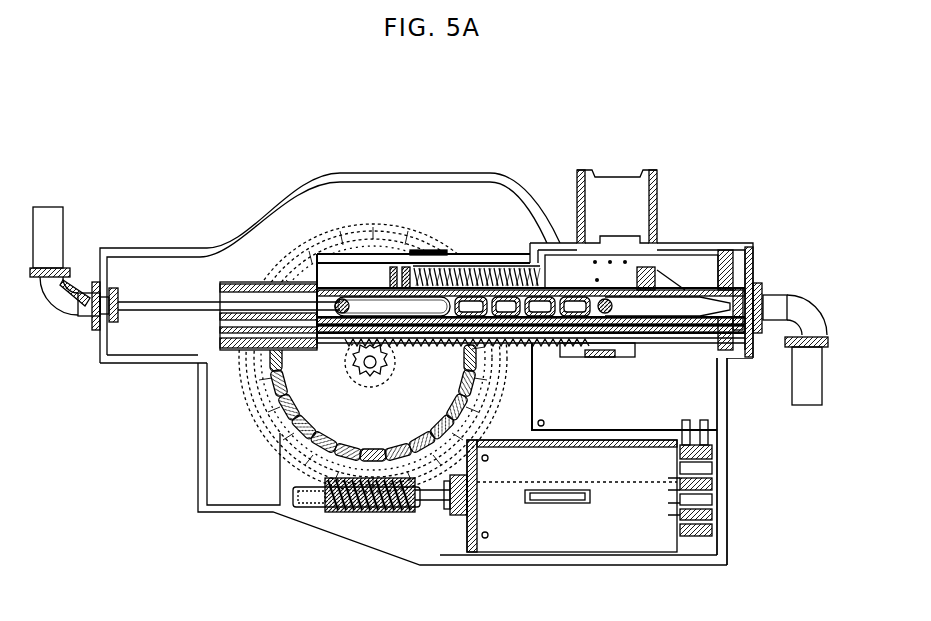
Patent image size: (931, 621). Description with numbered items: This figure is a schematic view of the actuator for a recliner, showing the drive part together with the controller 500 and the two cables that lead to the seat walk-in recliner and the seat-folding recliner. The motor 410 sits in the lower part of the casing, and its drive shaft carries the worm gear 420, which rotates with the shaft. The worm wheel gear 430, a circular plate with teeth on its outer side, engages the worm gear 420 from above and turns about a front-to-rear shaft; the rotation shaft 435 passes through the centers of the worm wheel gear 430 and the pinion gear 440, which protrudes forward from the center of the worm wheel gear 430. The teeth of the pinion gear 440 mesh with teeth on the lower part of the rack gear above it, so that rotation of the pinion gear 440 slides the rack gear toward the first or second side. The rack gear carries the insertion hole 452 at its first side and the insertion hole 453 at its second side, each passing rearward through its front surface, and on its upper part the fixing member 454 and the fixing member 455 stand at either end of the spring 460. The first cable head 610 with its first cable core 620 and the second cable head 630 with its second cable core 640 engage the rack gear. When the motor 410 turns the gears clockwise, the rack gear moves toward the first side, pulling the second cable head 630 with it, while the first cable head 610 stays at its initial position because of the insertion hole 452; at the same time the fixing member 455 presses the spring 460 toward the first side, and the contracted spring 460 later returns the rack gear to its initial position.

The motor 410 is at (665, 515).
The worm gear 420 is at (340, 512).
The worm wheel gear 430 is at (355, 377).
The rotation shaft 435 is at (355, 360).
The pinion gear 440 is at (265, 418).
The insertion hole 452 is at (700, 297).
The insertion hole 453 is at (378, 303).
The fixing member 454 is at (643, 268).
The fixing member 455 is at (400, 283).
The spring 460 is at (477, 272).
The controller 500 is at (690, 260).
The first cable head 610 is at (610, 297).
The first cable core 620 is at (723, 340).
The second cable head 630 is at (343, 305).
The second cable core 640 is at (187, 300).